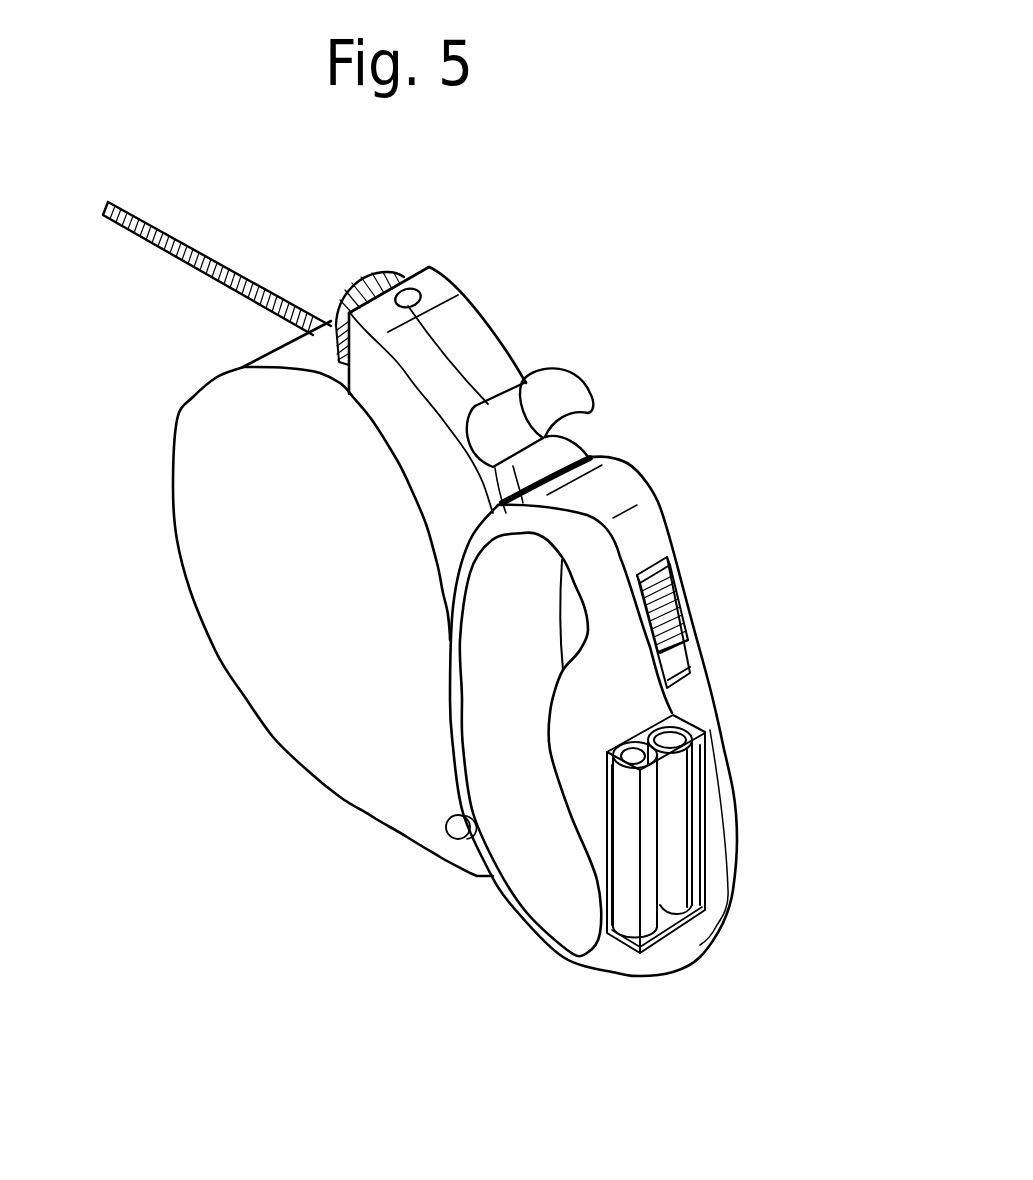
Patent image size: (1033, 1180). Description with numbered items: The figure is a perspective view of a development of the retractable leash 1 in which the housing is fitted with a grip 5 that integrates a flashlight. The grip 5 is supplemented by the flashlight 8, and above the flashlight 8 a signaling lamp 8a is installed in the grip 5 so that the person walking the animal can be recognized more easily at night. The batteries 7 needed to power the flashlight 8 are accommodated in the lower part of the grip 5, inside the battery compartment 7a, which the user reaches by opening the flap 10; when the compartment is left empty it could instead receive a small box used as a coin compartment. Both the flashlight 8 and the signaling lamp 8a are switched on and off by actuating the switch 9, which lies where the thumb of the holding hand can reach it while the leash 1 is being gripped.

The retractable leash 1 is at (245, 422).
The grip 5 is at (420, 438).
The batteries 7 is at (635, 782).
The battery compartment 7a is at (680, 716).
The flashlight 8 is at (360, 297).
The signaling lamp 8a is at (408, 298).
The switch 9 is at (660, 583).
The flap 10 is at (658, 947).